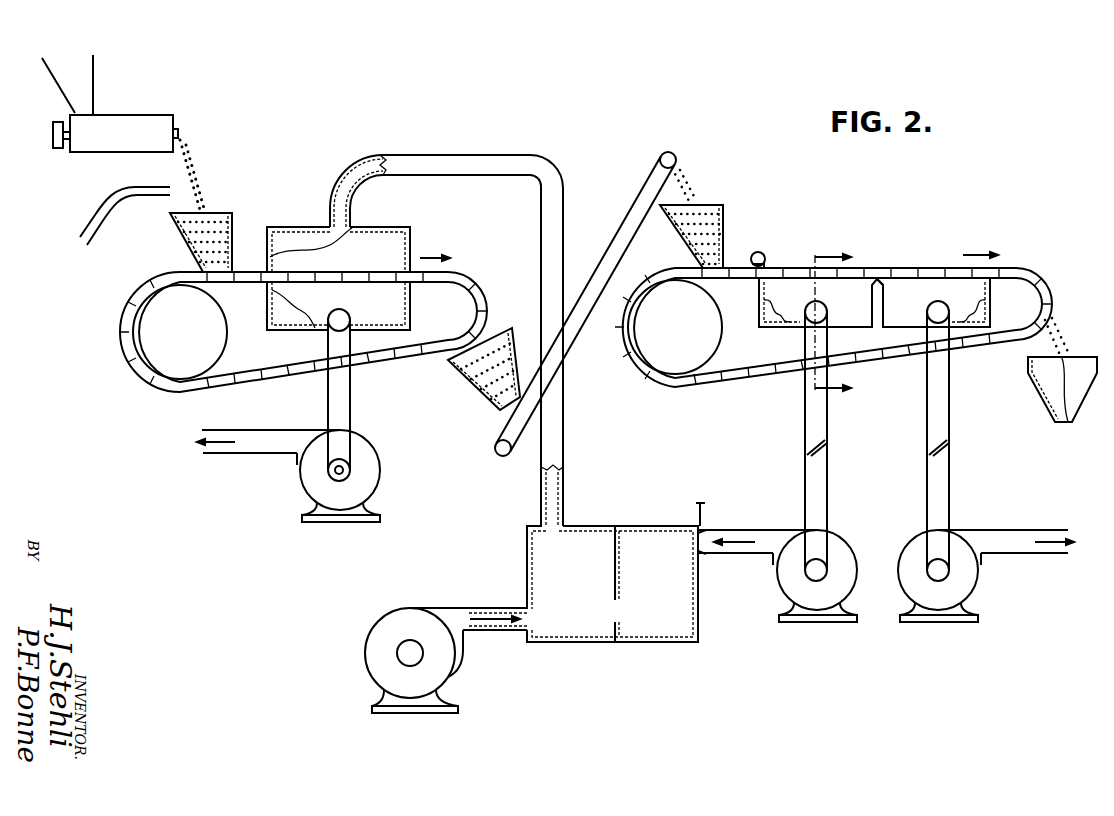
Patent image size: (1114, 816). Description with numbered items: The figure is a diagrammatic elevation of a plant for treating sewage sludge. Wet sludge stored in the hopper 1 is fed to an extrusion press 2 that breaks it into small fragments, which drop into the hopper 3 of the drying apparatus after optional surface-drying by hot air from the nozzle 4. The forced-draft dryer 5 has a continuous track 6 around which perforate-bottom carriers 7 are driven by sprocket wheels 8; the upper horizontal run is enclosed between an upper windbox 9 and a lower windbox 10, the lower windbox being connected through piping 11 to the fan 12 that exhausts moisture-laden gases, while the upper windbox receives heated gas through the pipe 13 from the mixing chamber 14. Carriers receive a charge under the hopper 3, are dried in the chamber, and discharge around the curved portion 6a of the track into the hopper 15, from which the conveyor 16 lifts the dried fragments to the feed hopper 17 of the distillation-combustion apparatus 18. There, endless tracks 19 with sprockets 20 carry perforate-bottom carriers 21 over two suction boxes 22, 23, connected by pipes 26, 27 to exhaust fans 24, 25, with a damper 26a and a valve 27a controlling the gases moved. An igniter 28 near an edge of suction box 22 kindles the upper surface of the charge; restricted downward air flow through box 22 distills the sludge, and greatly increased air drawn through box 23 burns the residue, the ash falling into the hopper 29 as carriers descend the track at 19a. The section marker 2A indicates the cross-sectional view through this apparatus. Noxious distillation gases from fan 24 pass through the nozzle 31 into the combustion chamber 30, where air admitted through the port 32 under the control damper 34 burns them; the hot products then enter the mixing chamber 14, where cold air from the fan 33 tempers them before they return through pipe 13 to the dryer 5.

The hopper 1 is at (93, 73).
The extrusion press 2 is at (129, 163).
The hopper 3 is at (186, 249).
The nozzle 4 is at (165, 195).
The forced-draft dryer 5 is at (145, 382).
The continuous track 6 is at (247, 283).
The curved portion of the track 6a is at (476, 311).
The perforate-bottom carriers 7 is at (470, 276).
The sprocket wheels 8 is at (226, 331).
The upper windbox 9 is at (338, 249).
The lower windbox 10 is at (338, 306).
The piping 11 is at (352, 408).
The fan 12 is at (380, 488).
The pipe 13 is at (436, 153).
The mixing chamber 14 is at (612, 584).
The hopper 15 is at (484, 392).
The conveyor 16 is at (637, 188).
The feed hopper 17 is at (723, 215).
The distillation-combustion apparatus 18 is at (690, 392).
The endless tracks 19 is at (724, 282).
The track 19a is at (1041, 300).
The sprockets 20 is at (714, 330).
The perforate-bottom carriers 21 is at (1030, 268).
The suction box 22 is at (821, 302).
The suction box 23 is at (933, 302).
The exhaust fan 24 is at (770, 605).
The exhaust fan 25 is at (972, 592).
The connecting pipe 26 is at (805, 486).
The damper 26a is at (808, 448).
The connecting pipe 27 is at (950, 494).
The valve 27a is at (950, 450).
The igniter 28 is at (765, 252).
The hopper 29 is at (1065, 422).
The combustion chamber 30 is at (662, 633).
The nozzle 31 is at (708, 555).
The port 32 is at (706, 535).
The fan 33 is at (363, 655).
The control damper 34 is at (698, 503).
The section line 2A is at (850, 323).